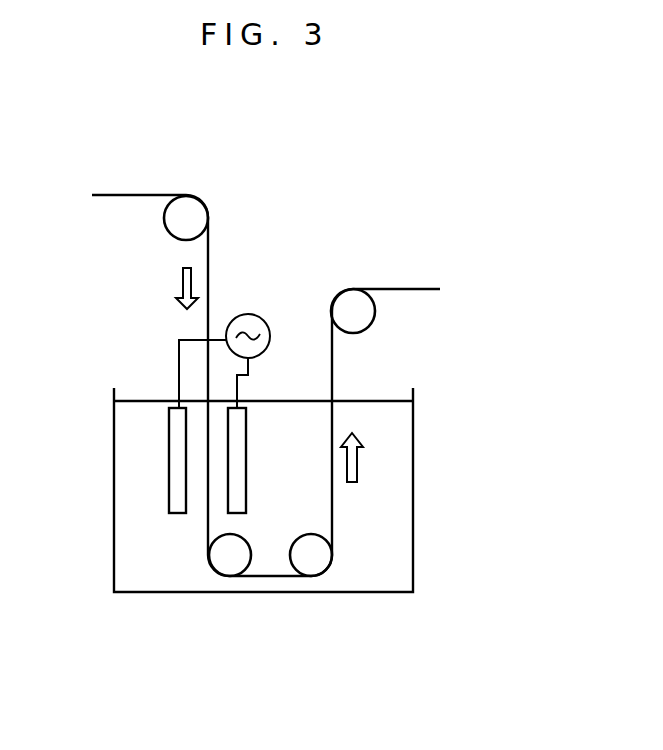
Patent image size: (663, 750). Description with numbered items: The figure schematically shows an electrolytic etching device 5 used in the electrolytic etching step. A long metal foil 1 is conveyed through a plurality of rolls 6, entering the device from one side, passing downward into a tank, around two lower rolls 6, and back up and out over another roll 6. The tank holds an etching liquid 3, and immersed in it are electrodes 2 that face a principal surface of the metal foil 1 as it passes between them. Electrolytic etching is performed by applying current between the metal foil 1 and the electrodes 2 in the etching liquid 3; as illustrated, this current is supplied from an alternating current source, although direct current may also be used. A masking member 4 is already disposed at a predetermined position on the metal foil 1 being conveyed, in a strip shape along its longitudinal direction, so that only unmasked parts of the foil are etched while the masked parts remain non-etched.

The metal foil 1 is at (266, 349).
The masking member 4 is at (137, 195).
The electrode 2 is at (238, 486).
The etching liquid 3 is at (392, 515).
The electrolytic etching device 5 is at (378, 192).
The rolls 6 is at (184, 219).